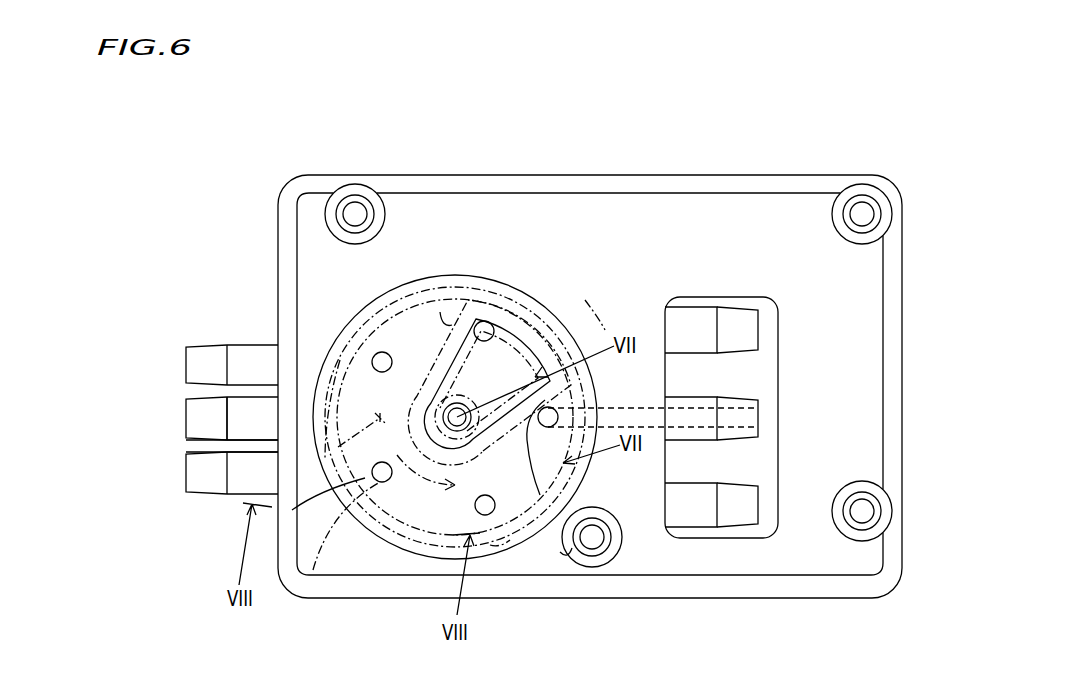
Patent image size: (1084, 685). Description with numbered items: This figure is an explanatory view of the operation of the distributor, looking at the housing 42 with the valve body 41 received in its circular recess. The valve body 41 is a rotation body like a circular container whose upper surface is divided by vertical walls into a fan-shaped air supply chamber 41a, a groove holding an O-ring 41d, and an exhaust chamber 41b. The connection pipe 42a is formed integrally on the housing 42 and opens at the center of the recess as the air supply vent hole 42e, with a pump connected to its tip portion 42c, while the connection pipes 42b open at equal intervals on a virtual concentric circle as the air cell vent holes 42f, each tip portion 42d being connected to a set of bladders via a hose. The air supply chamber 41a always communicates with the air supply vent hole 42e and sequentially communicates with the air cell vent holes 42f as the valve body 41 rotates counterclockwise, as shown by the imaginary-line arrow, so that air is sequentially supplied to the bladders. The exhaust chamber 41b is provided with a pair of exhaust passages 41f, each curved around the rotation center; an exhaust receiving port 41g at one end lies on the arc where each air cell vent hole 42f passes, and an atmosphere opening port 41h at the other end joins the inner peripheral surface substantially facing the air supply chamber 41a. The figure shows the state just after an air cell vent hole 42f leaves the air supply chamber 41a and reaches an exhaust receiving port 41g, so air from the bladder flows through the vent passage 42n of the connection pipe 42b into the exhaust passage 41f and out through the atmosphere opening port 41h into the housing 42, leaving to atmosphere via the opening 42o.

The housing 42 is at (612, 175).
The connection pipe 42a is at (245, 413).
The connection pipe 42b is at (252, 360).
The tip portion 42c is at (200, 430).
The tip portion 42d is at (205, 355).
The air supply vent hole 42e is at (556, 345).
The air cell vent hole 42f is at (388, 360).
The vent passage 42n is at (640, 416).
The opening 42o is at (768, 320).
The valve body 41 is at (360, 335).
The air supply chamber 41a is at (532, 330).
The exhaust chamber 41b is at (347, 447).
The O-ring 41d is at (605, 318).
The exhaust passage 41f is at (340, 360).
The exhaust receiving port 41g is at (445, 318).
The atmosphere opening port 41h is at (313, 570).